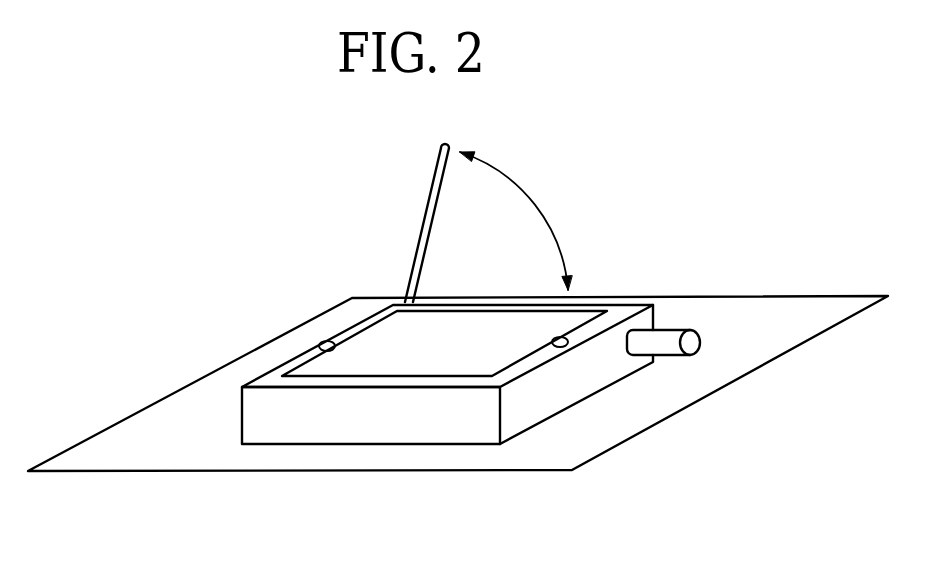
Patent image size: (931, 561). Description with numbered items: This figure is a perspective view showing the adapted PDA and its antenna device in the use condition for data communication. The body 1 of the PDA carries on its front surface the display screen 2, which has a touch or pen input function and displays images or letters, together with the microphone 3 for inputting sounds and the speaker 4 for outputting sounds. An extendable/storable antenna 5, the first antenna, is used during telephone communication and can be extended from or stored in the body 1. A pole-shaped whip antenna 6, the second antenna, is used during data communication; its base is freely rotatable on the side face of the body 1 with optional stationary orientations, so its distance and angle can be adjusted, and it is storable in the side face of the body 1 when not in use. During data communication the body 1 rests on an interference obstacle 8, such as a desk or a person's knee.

The body 1 is at (382, 428).
The display screen 2 is at (455, 332).
The microphone 3 is at (322, 343).
The speaker 4 is at (566, 337).
The extendable/storable antenna 5 is at (675, 332).
The whip antenna 6 is at (434, 178).
The interference obstacle 8 is at (778, 320).